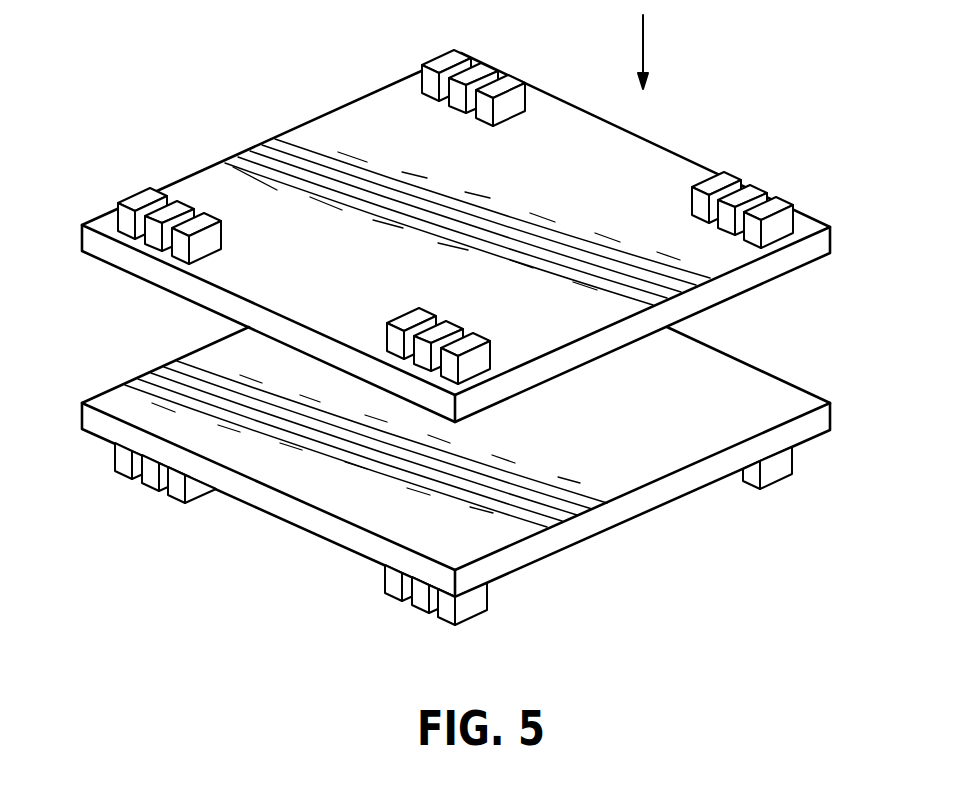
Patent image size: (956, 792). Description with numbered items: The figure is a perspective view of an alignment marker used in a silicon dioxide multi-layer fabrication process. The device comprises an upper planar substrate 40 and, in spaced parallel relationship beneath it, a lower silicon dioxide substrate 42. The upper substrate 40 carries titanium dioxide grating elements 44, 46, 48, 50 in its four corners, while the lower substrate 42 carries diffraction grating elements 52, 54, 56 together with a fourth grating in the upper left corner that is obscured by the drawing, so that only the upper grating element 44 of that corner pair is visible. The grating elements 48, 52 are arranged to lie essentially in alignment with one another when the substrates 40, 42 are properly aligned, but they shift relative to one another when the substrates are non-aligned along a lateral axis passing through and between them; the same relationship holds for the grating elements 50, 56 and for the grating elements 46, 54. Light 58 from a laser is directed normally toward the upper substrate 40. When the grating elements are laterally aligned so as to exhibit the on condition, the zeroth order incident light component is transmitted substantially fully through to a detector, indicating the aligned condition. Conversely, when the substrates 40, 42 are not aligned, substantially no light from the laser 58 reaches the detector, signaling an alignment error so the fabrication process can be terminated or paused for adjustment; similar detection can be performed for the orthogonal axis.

The upper planar substrate 40 is at (355, 128).
The lower SiO2 substrate 42 is at (165, 382).
The grating element 44 is at (487, 67).
The grating element 46 is at (745, 192).
The grating element 48 is at (142, 197).
The grating element 50 is at (440, 328).
The diffraction grating element 52 is at (150, 490).
The diffraction grating element 54 is at (768, 487).
The diffraction grating element 56 is at (467, 622).
The light 58 is at (642, 46).